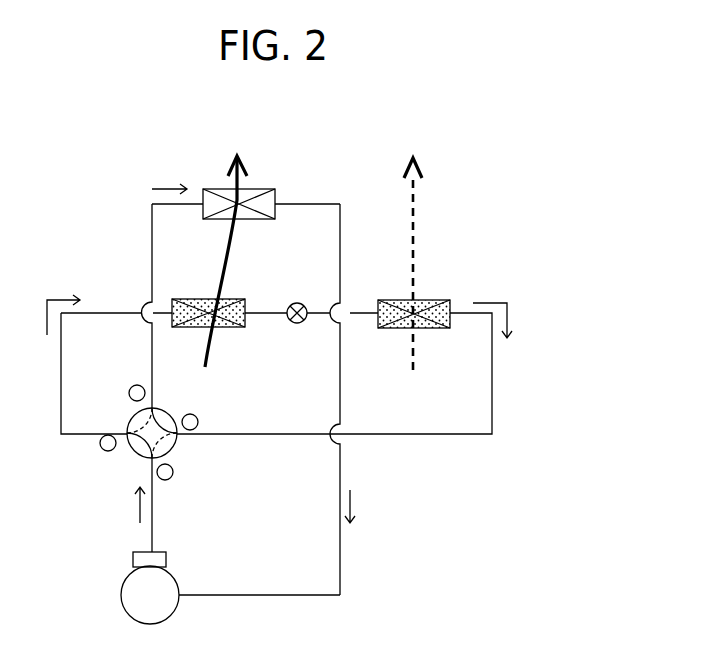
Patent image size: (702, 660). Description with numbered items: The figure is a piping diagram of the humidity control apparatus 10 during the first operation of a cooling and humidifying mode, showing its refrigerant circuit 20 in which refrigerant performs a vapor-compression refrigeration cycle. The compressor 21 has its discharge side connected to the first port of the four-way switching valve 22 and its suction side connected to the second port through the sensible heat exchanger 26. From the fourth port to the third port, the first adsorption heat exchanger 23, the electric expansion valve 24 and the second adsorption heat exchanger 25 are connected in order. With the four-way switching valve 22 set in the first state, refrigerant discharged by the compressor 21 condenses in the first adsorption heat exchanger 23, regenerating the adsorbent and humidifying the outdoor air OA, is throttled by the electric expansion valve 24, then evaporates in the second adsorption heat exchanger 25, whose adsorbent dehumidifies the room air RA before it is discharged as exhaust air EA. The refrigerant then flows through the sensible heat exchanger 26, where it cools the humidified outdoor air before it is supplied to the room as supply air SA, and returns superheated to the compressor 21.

The humidity control apparatus 10 is at (92, 190).
The refrigerant circuit 20 is at (493, 383).
The compressor 21 is at (122, 593).
The four-way switching valve 22 is at (137, 456).
The first adsorption heat exchanger 23 is at (190, 299).
The electric expansion valve 24 is at (297, 324).
The second adsorption heat exchanger 25 is at (428, 300).
The sensible heat exchanger 26 is at (277, 193).